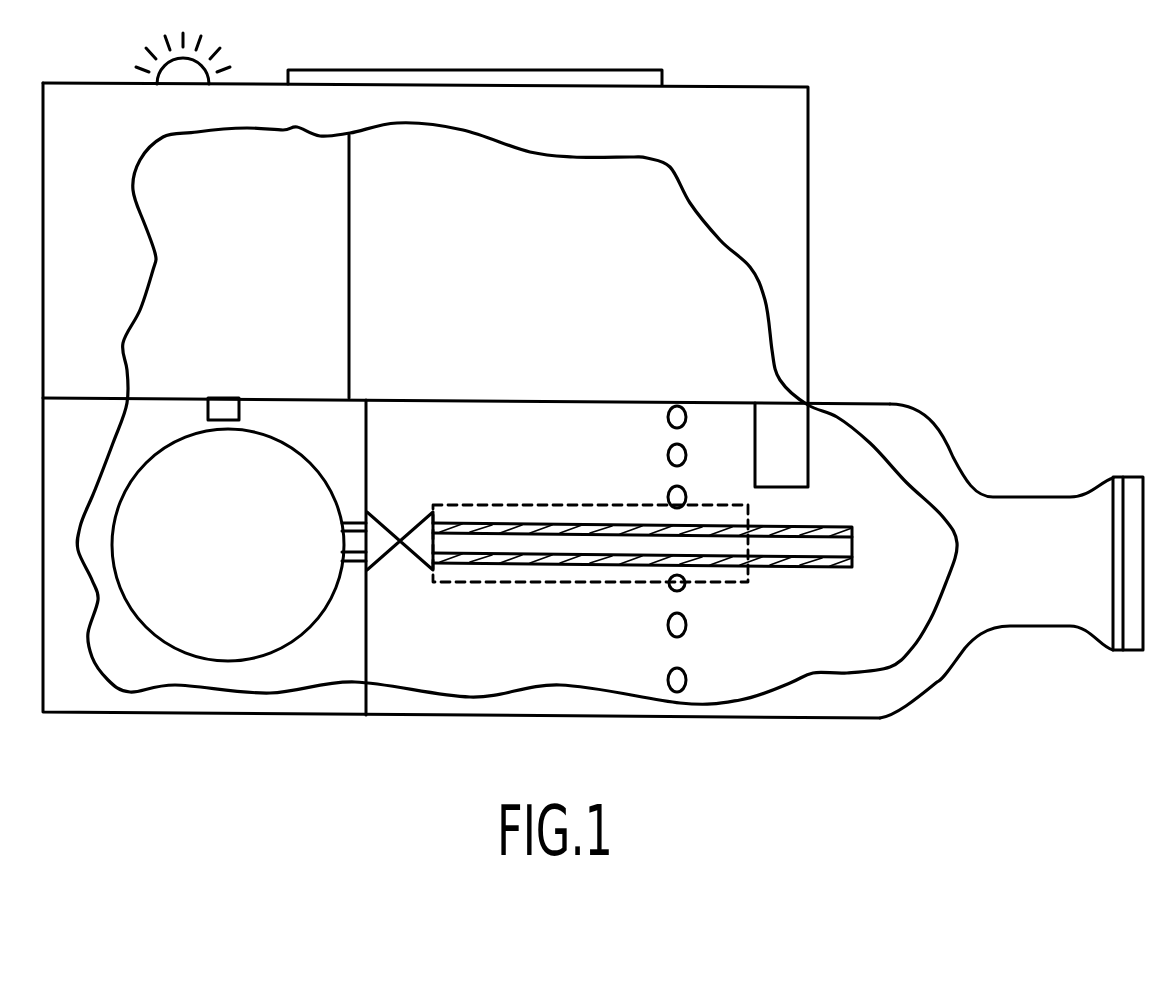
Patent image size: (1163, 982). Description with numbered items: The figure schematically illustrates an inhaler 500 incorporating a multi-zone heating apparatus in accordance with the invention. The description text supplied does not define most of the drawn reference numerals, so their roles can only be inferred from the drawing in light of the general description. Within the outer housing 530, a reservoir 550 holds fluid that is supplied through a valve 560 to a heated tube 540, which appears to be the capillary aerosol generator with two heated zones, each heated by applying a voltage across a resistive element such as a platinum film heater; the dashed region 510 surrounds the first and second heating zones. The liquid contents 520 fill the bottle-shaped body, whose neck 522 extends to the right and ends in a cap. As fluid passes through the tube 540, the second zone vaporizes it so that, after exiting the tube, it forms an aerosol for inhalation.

The inhaler 500 is at (870, 88).
The heating zone region 510 is at (727, 583).
The liquid / bottle contents 520 is at (940, 413).
The bottle neck 522 is at (1035, 626).
The housing 530 is at (808, 185).
The heating tube 540 is at (787, 565).
The reservoir tank 550 is at (199, 657).
The valve 560 is at (415, 567).